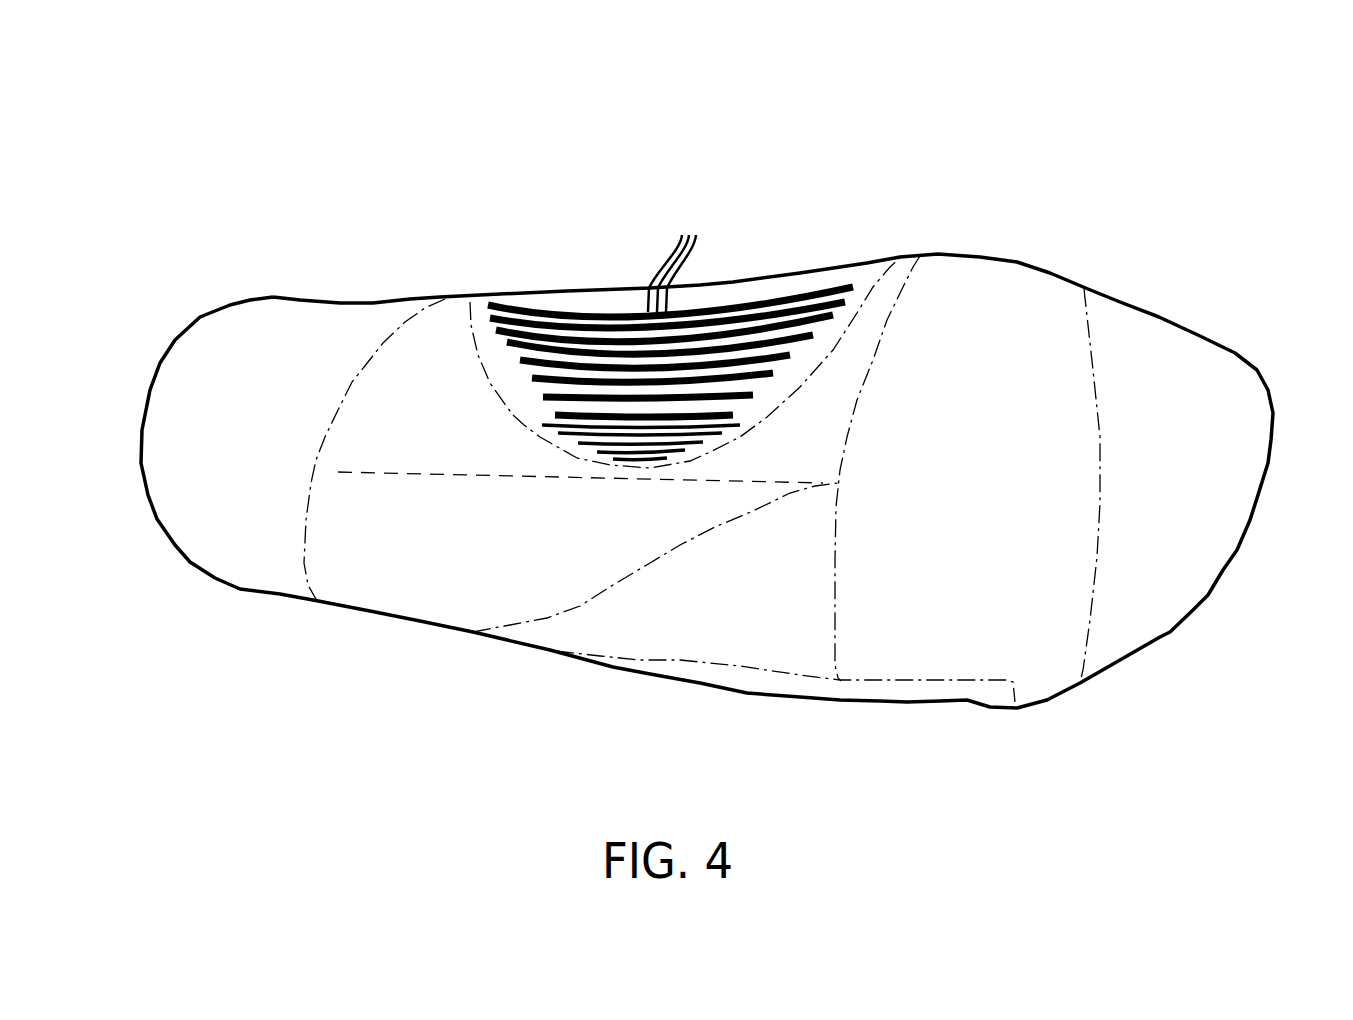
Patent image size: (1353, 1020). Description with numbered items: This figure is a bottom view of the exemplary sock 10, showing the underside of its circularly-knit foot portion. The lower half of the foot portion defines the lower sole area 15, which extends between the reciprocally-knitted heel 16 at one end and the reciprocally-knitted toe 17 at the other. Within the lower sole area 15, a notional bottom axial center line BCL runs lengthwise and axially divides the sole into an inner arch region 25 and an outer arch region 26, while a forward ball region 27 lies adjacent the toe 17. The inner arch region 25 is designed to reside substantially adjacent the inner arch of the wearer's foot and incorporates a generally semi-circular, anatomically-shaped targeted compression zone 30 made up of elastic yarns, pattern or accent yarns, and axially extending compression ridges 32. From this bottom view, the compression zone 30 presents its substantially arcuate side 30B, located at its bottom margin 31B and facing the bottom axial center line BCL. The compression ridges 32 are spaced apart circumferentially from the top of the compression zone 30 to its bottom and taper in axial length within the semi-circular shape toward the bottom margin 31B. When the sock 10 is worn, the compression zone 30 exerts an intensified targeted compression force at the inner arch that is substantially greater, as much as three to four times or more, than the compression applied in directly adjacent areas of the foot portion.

The sock 10 is at (1106, 200).
The lower sole area 15 is at (478, 255).
The heel 16 is at (229, 345).
The toe 17 is at (1147, 340).
The inner arch region 25 is at (452, 317).
The outer arch region 26 is at (445, 602).
The forward ball region 27 is at (985, 290).
The targeted compression zone 30 is at (852, 245).
The arcuate side 30B is at (513, 417).
The bottom margin 31B is at (582, 443).
The compression ridges 32 is at (675, 262).
The bottom axial center line BCL is at (447, 475).